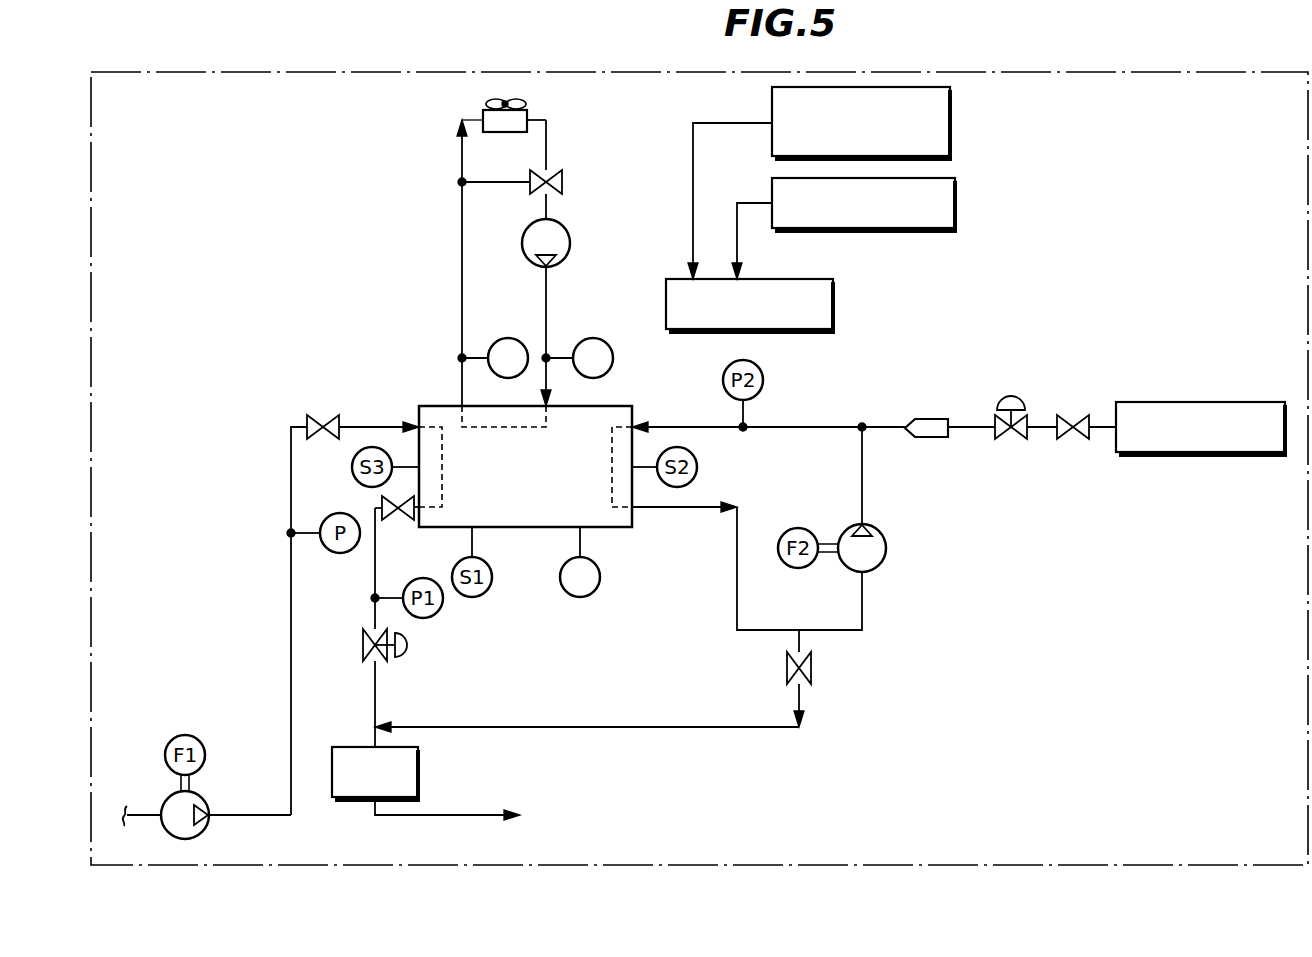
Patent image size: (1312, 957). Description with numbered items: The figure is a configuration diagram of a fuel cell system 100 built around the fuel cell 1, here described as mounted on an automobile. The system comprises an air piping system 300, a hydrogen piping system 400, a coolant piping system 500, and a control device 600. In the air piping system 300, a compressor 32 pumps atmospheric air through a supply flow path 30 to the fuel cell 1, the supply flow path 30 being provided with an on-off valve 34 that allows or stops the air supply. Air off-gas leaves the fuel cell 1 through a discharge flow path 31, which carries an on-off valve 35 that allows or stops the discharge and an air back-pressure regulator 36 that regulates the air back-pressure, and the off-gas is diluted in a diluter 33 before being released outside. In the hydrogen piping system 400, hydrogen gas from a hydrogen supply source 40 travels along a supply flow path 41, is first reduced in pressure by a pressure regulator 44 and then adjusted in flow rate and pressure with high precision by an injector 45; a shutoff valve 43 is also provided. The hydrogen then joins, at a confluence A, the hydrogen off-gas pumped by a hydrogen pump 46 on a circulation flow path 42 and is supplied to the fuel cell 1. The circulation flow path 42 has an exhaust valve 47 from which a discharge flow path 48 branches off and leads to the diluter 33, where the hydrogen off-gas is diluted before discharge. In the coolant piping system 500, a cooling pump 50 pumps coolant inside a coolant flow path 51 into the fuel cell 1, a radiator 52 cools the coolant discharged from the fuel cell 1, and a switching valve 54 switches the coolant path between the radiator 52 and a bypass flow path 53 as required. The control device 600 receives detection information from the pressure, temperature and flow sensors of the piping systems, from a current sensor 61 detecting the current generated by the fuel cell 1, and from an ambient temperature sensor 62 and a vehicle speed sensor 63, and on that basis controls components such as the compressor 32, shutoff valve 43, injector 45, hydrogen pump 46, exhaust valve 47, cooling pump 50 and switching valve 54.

The fuel cell system 100 is at (630, 72).
The coolant piping system 500 is at (452, 245).
The coolant flow path 51 is at (460, 158).
The radiator 52 is at (480, 112).
The bypass flow path 53 is at (512, 185).
The switching valve 54 is at (552, 172).
The cooling pump 50 is at (572, 240).
The fuel cell 1 is at (545, 527).
The current sensor 61 is at (580, 562).
The air piping system 300 is at (267, 640).
The supply flow path 30 is at (291, 588).
The discharge flow path 31 is at (376, 540).
The compressor 32 is at (190, 840).
The diluter 33 is at (420, 773).
The on-off valve 34 is at (318, 416).
The on-off valve 35 is at (382, 503).
The air back-pressure regulator 36 is at (408, 655).
The hydrogen piping system 400 is at (950, 396).
The hydrogen supply source 40 is at (1187, 402).
The supply flow path 41 is at (808, 422).
The circulation flow path 42 is at (737, 588).
The shutoff valve 43 is at (1080, 440).
The pressure regulator 44 is at (1016, 440).
The injector 45 is at (928, 438).
The hydrogen pump 46 is at (887, 548).
The exhaust valve 47 is at (813, 676).
The discharge flow path 48 is at (658, 727).
The confluence A is at (865, 432).
The control device 600 is at (836, 309).
The ambient temperature sensor 62 is at (952, 124).
The vehicle speed sensor 63 is at (957, 200).